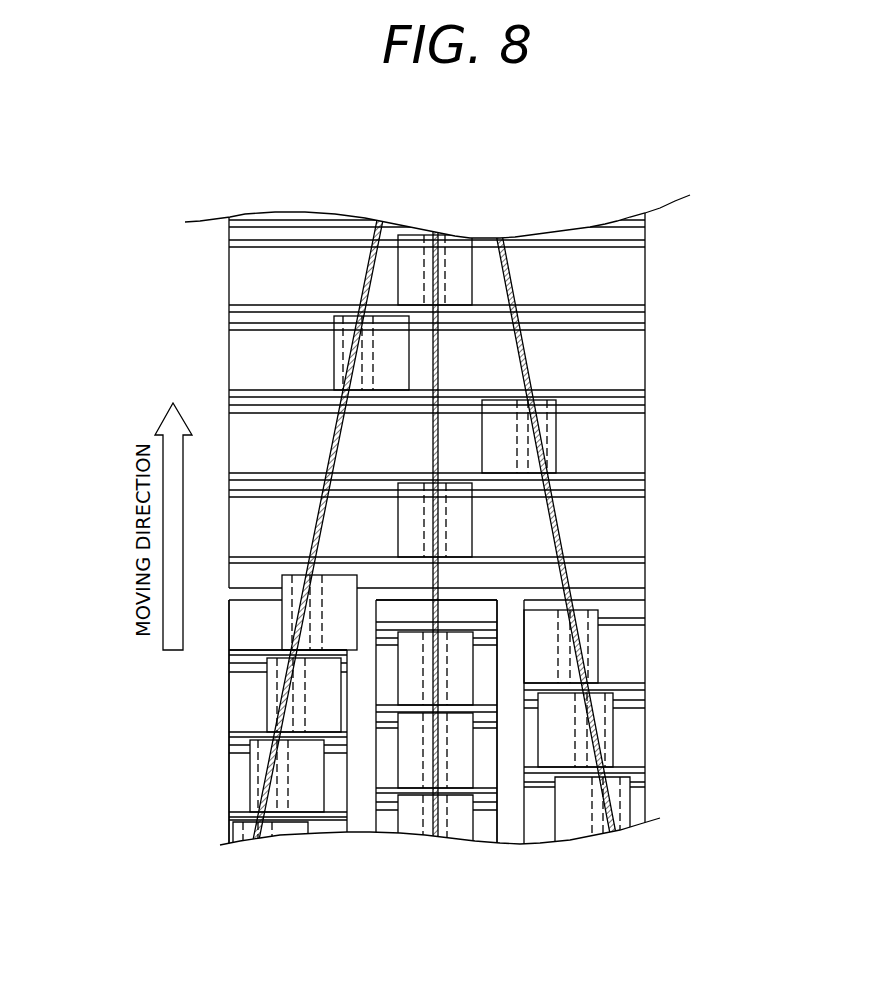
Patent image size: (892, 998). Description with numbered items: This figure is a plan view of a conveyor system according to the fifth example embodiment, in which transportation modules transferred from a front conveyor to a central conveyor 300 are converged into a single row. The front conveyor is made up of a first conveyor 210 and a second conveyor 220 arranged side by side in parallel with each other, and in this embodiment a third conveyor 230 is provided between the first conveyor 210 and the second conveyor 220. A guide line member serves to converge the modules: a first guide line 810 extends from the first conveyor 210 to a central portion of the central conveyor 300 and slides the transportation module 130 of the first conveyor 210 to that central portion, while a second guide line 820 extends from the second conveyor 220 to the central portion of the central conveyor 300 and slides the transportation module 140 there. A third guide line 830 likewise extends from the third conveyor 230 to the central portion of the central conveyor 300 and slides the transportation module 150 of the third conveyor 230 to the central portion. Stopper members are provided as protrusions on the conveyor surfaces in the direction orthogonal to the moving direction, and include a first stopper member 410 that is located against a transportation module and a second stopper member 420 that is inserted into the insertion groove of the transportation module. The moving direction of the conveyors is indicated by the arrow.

The transportation module 130 is at (273, 687).
The transportation module 140 is at (593, 640).
The transportation module 150 is at (407, 767).
The first conveyor 210 is at (230, 757).
The second conveyor 220 is at (640, 723).
The third conveyor 230 is at (485, 835).
The central conveyor 300 is at (195, 347).
The first stopper member 410 is at (645, 472).
The second stopper member 420 is at (645, 407).
The first guide line 810 is at (363, 279).
The second guide line 820 is at (570, 573).
The third guide line 830 is at (440, 343).